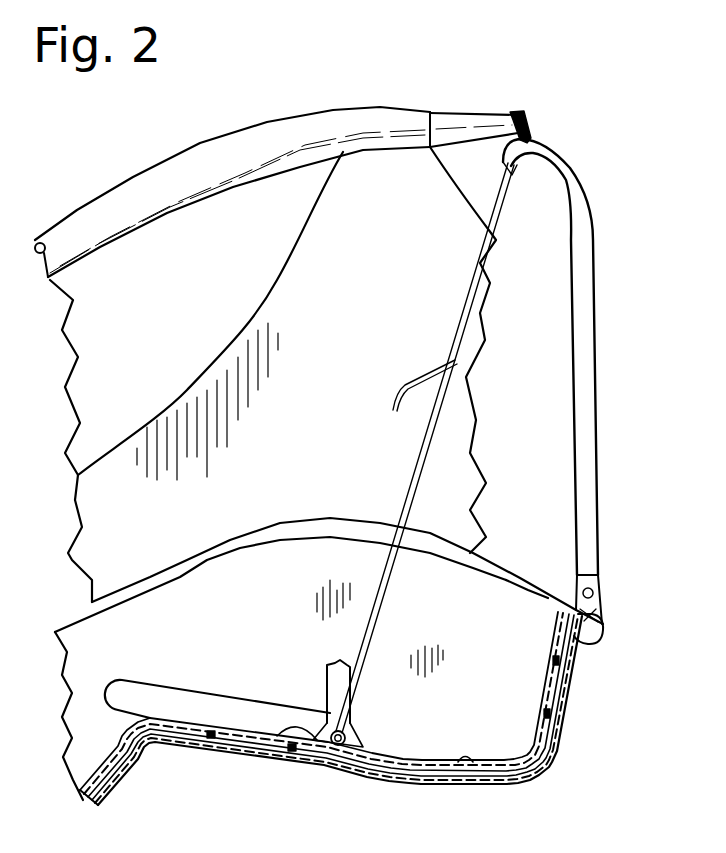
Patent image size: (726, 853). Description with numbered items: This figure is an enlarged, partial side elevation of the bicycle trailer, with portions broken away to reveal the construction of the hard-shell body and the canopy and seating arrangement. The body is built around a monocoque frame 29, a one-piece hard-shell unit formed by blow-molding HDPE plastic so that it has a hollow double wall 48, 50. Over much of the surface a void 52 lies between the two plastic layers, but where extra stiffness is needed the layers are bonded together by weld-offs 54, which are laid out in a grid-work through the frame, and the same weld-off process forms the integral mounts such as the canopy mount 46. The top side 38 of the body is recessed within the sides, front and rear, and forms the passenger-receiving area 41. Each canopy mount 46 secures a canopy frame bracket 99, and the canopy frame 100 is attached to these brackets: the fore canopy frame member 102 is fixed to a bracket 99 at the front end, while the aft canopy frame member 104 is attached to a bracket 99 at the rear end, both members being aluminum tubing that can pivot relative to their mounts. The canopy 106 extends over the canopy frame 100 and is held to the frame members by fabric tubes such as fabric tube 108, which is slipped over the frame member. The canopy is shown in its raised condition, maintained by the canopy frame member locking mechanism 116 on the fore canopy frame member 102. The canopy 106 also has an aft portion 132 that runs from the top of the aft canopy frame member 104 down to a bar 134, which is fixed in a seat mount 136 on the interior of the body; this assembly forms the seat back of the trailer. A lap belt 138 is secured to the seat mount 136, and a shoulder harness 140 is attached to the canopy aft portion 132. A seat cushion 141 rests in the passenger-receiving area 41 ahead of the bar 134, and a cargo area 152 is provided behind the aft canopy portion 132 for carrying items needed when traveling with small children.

The canopy frame 100 is at (494, 93).
The fore canopy frame member 102 is at (450, 120).
The aft canopy frame member 104 is at (576, 193).
The canopy 106 is at (356, 397).
The fabric tube 108 is at (250, 150).
The canopy frame member locking mechanism 116 is at (543, 124).
The aft portion 132 is at (504, 218).
The bar 134 is at (337, 752).
The seat mount 136 is at (280, 748).
The lap belt 138 is at (325, 687).
The shoulder harness 140 is at (413, 378).
The seat cushion 141 is at (128, 690).
The cargo area 152 is at (531, 622).
The monocoque frame 29 is at (556, 742).
The top side 38 is at (480, 783).
The passenger-receiving area 41 is at (236, 618).
The canopy mount 46 is at (603, 643).
The double wall 48 is at (570, 663).
The double wall 50 is at (546, 660).
The void 52 is at (556, 727).
The weld-offs 54 is at (210, 742).
The canopy frame bracket 99 is at (598, 606).